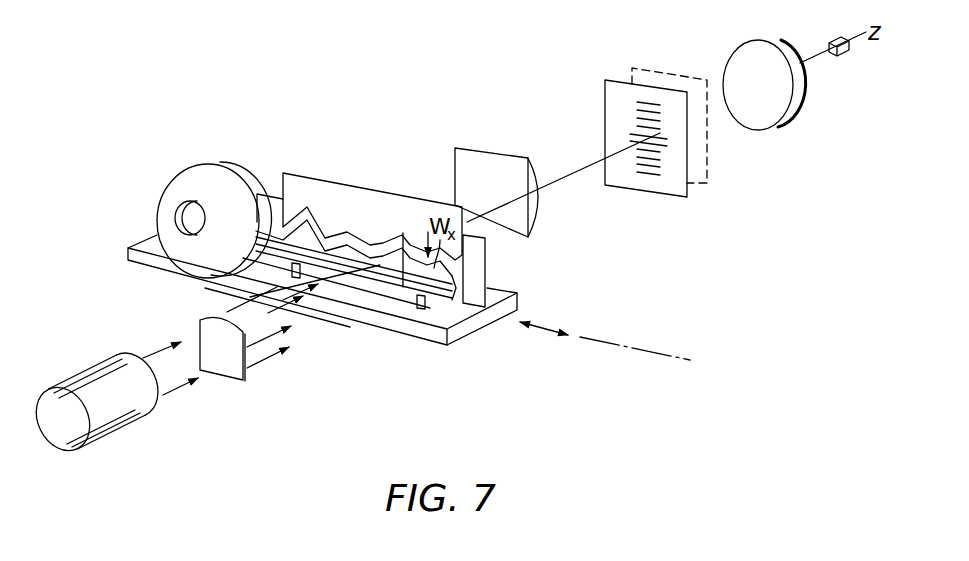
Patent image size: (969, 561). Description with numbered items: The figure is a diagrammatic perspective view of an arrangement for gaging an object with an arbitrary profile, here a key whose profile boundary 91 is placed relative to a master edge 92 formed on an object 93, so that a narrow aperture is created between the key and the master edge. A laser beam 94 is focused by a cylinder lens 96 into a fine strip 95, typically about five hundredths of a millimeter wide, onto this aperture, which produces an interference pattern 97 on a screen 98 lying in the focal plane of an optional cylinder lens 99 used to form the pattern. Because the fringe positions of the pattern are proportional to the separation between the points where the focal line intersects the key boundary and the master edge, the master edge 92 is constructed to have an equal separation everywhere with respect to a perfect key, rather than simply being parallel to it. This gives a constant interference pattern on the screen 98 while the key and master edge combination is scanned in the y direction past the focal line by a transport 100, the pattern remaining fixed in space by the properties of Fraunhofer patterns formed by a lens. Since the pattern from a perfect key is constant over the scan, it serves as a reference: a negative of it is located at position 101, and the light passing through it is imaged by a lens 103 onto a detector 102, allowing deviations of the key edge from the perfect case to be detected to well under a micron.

The boundary 91 is at (445, 295).
The master edge 92 is at (470, 262).
The object 93 is at (392, 217).
The laser beam 94 is at (124, 411).
The fine strip 95 is at (412, 284).
The cylinder lens 96 is at (243, 375).
The interference pattern 97 is at (627, 178).
The screen 98 is at (657, 194).
The cylinder lens 99 is at (467, 160).
The transport 100 is at (458, 343).
The position 101 is at (707, 175).
The detector 102 is at (843, 56).
The lens 103 is at (783, 122).